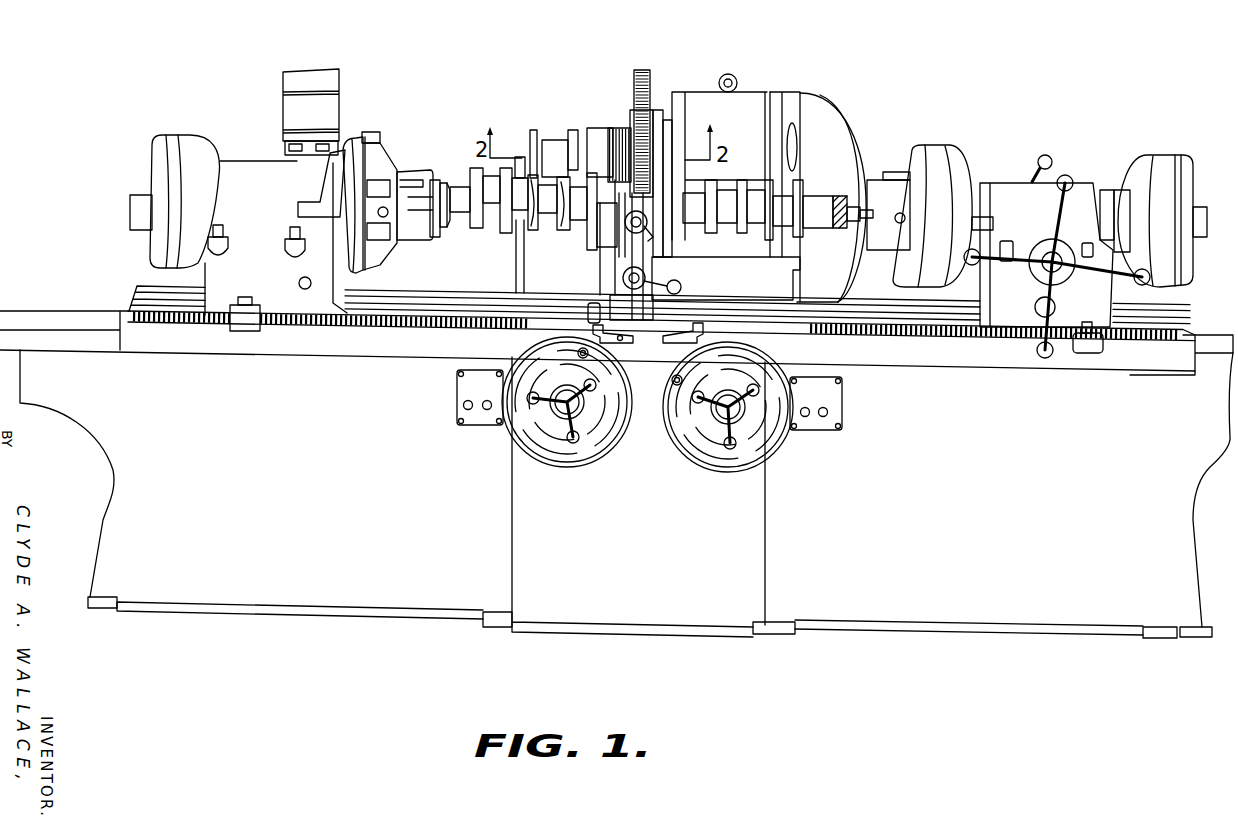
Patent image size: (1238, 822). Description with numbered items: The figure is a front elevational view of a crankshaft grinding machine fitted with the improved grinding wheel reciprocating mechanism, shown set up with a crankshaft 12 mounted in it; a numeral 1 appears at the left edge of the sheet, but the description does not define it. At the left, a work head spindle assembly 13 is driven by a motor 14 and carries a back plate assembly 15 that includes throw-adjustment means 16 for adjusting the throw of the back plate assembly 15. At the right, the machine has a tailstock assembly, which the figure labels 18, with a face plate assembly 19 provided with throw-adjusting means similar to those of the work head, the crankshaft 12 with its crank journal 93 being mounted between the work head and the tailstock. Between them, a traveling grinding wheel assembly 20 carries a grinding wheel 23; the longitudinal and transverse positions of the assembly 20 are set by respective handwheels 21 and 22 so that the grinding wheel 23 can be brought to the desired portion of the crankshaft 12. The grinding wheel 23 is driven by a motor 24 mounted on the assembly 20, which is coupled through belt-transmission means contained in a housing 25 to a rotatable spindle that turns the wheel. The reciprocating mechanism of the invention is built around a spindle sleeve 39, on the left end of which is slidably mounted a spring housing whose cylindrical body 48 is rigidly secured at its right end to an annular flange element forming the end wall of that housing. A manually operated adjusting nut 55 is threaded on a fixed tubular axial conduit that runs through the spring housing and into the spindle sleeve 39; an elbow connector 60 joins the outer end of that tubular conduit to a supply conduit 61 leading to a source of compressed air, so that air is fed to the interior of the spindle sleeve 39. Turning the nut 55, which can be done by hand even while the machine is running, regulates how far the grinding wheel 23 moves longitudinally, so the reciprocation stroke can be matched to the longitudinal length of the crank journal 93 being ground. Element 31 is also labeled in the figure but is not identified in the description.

The lathe 1 is at (19, 298).
The crankshaft 12 is at (457, 183).
The work head spindle assembly 13 is at (170, 137).
The motor 14 is at (337, 90).
The back plate assembly 15 is at (413, 167).
The throw-adjustment means 16 is at (373, 132).
The tailstock 18 is at (1007, 187).
The face plate assembly 19 is at (947, 150).
The traveling grinding wheel assembly 20 is at (760, 90).
The handwheel 21 is at (580, 473).
The handwheel 22 is at (727, 470).
The grinding wheel 23 is at (647, 68).
The motor 24 is at (697, 97).
The housing 25 is at (843, 98).
The crank web 31 is at (600, 128).
The spindle sleeve 39 is at (580, 147).
The cylindrical body 48 is at (557, 147).
The adjusting nut 55 is at (533, 130).
The elbow connector 60 is at (671, 159).
The conduit 61 is at (520, 267).
The crank journal 93 is at (728, 187).